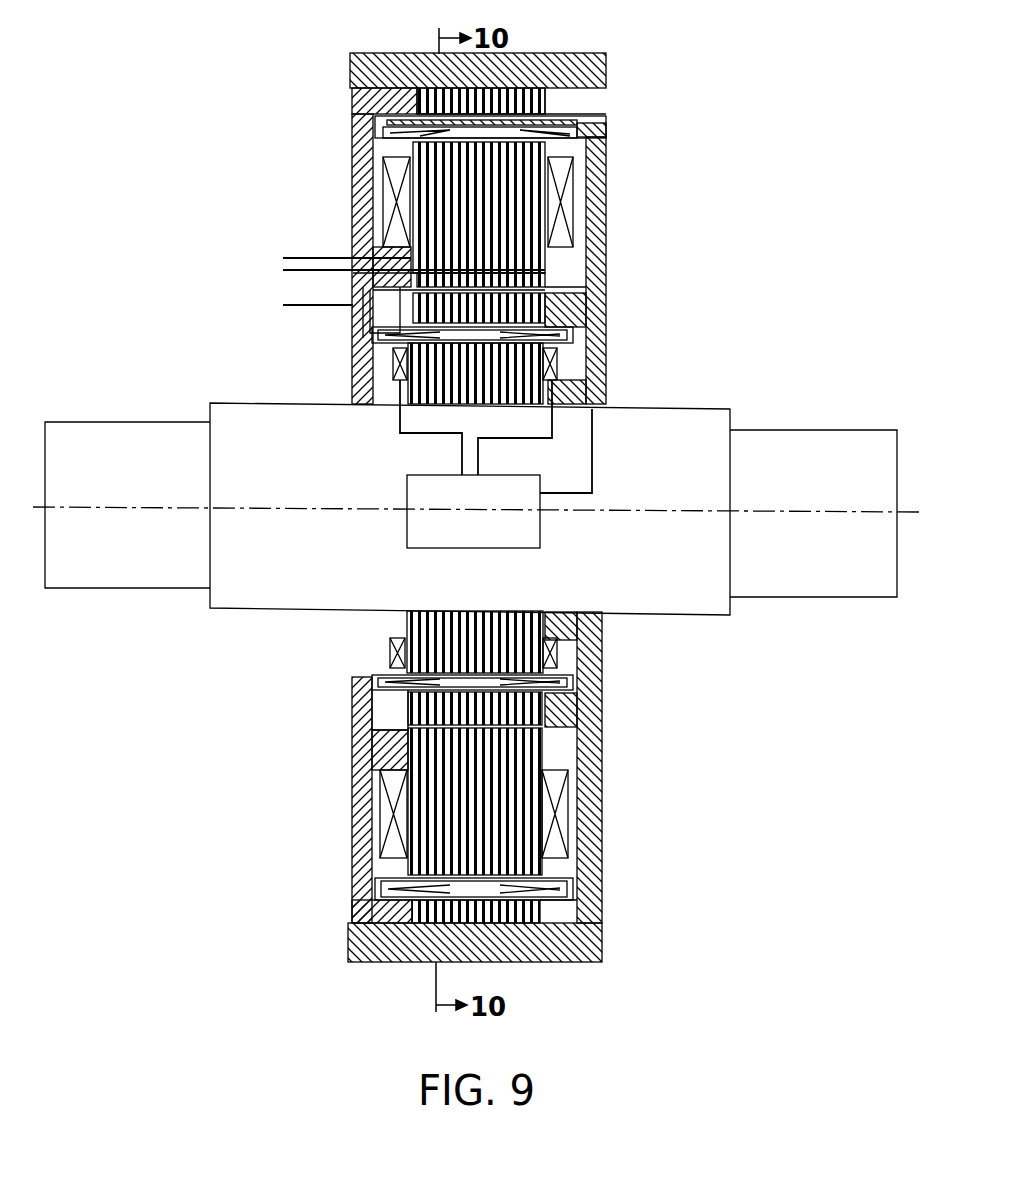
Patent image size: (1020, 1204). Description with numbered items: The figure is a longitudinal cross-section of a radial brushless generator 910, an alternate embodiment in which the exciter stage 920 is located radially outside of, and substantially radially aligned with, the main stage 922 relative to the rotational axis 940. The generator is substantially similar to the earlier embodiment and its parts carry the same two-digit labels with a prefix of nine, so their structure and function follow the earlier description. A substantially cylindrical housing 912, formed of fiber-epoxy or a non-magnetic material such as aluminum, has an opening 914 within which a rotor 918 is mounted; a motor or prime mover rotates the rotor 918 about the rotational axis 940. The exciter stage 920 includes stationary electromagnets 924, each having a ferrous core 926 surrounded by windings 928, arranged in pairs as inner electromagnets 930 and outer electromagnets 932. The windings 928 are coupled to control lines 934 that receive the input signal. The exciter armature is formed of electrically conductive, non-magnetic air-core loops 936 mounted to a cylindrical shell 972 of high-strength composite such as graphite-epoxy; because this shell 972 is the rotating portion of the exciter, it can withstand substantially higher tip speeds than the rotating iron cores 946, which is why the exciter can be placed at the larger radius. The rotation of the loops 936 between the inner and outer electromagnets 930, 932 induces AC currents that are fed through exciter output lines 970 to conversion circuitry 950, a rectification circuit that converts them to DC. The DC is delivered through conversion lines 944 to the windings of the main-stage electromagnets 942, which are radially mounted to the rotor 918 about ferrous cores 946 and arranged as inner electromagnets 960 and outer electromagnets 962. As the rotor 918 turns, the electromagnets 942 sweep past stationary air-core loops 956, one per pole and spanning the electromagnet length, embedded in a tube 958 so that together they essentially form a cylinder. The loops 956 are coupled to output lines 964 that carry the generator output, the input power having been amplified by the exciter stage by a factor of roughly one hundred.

The radial brushless generator 910 is at (712, 122).
The housing 912 is at (352, 98).
The opening 914 is at (353, 340).
The rotor 918 is at (684, 406).
The exciter stage 920 is at (620, 58).
The main stage 922 is at (612, 290).
The stationary electromagnets 924 is at (428, 88).
The ferrous core 926 is at (603, 57).
The windings 928 is at (387, 190).
The inner electromagnets 930 is at (528, 178).
The outer electromagnets 932 is at (497, 100).
The control lines 934 is at (279, 250).
The air-core loops 936 is at (388, 130).
The rotational axis 940 is at (906, 510).
The electromagnets 942 is at (417, 707).
The conversion lines 944 is at (462, 460).
The ferrous cores 946 is at (428, 387).
The conversion circuitry 950 is at (407, 520).
The air-core loops 956 is at (575, 681).
The tube 958 is at (372, 678).
The inner electromagnets 960 is at (405, 621).
The outer electromagnets 962 is at (523, 717).
The output lines 964 is at (307, 305).
The exciter output lines 970 is at (592, 460).
The cylindrical shell 972 is at (540, 898).